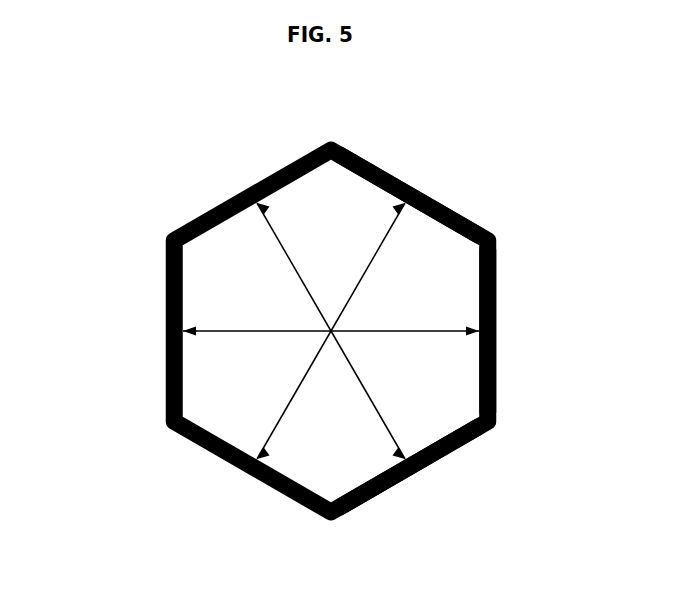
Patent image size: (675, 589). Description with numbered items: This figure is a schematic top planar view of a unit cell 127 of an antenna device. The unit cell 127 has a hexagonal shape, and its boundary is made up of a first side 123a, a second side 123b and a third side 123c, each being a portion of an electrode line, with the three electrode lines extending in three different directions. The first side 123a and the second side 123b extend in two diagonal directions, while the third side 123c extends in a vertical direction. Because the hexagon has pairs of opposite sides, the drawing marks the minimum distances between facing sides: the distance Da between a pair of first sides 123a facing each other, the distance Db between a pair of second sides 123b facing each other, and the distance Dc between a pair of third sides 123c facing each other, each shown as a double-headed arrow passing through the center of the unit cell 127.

The unit cell 127 is at (78, 97).
The first side 123a is at (437, 465).
The second side 123b is at (437, 198).
The third side 123c is at (498, 350).